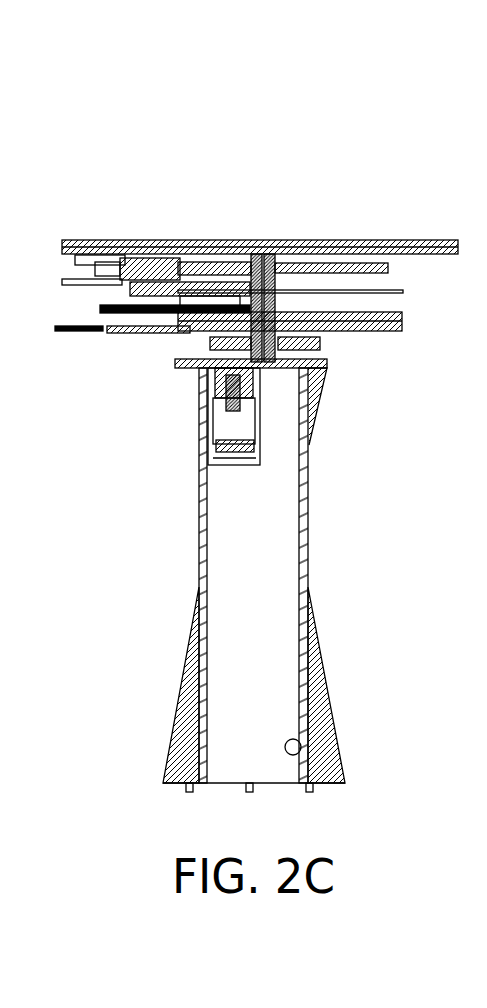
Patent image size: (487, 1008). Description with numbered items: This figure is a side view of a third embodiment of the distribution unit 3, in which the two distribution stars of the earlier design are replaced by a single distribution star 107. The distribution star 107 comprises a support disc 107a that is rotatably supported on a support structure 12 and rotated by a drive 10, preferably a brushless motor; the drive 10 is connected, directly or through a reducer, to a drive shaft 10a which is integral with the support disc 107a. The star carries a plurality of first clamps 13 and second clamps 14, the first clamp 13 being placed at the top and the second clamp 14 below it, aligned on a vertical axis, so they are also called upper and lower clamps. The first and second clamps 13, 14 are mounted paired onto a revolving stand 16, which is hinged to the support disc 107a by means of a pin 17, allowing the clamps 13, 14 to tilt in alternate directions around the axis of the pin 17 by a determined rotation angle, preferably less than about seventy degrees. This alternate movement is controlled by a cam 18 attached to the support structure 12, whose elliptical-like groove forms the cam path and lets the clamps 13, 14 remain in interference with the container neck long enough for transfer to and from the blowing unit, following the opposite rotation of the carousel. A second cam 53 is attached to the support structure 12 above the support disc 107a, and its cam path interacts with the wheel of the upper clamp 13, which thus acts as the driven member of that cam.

The distribution unit 3 is at (382, 161).
The second cam 53 is at (398, 240).
The support disc 107a is at (228, 262).
The distribution star 107 is at (321, 252).
The drive shaft 10a is at (278, 293).
The cam 18 is at (358, 331).
The pin 17 is at (160, 272).
The revolving stand 16 is at (186, 272).
The first clamp 13 is at (50, 270).
The second clamp 14 is at (68, 331).
The drive 10 is at (205, 445).
The support structure 12 is at (310, 567).